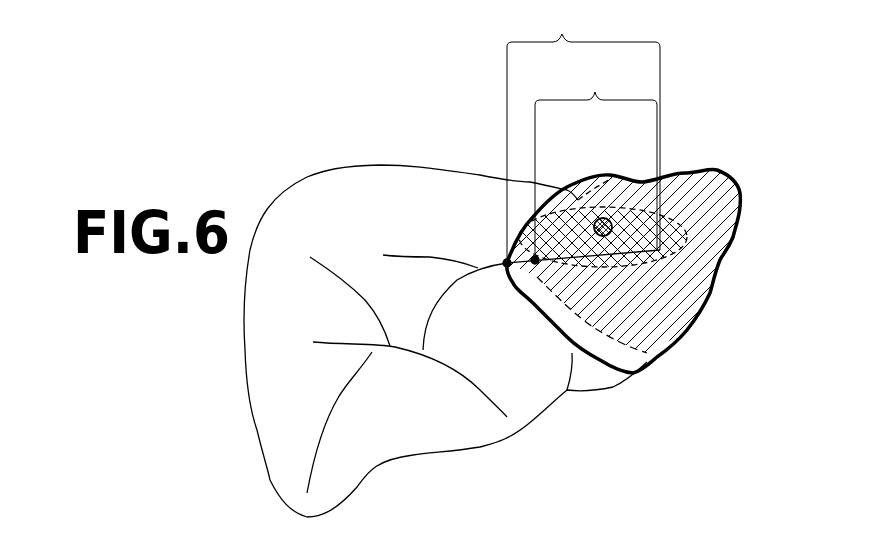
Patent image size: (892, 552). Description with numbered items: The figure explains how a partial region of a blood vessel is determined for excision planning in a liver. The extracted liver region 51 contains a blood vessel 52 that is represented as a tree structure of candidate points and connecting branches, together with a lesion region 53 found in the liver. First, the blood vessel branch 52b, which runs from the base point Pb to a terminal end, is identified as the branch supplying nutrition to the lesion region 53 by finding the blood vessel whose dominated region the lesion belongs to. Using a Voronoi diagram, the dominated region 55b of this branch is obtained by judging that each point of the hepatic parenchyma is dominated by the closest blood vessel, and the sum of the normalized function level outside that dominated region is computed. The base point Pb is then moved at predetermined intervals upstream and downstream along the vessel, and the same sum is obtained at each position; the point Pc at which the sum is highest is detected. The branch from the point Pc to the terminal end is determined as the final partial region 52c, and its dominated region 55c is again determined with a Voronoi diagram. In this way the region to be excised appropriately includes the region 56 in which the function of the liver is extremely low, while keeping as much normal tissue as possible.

The liver region 51 is at (360, 166).
The blood vessel 52 is at (340, 392).
The blood vessel branch 52b is at (583, 167).
The partial region 52c is at (583, 138).
The lesion region 53 is at (606, 218).
The dominated region 55b is at (673, 313).
The dominated region 55c is at (643, 367).
The region in which the function of the liver is extremely low 56 is at (692, 232).
The point Pc is at (505, 267).
The base point Pb is at (534, 264).